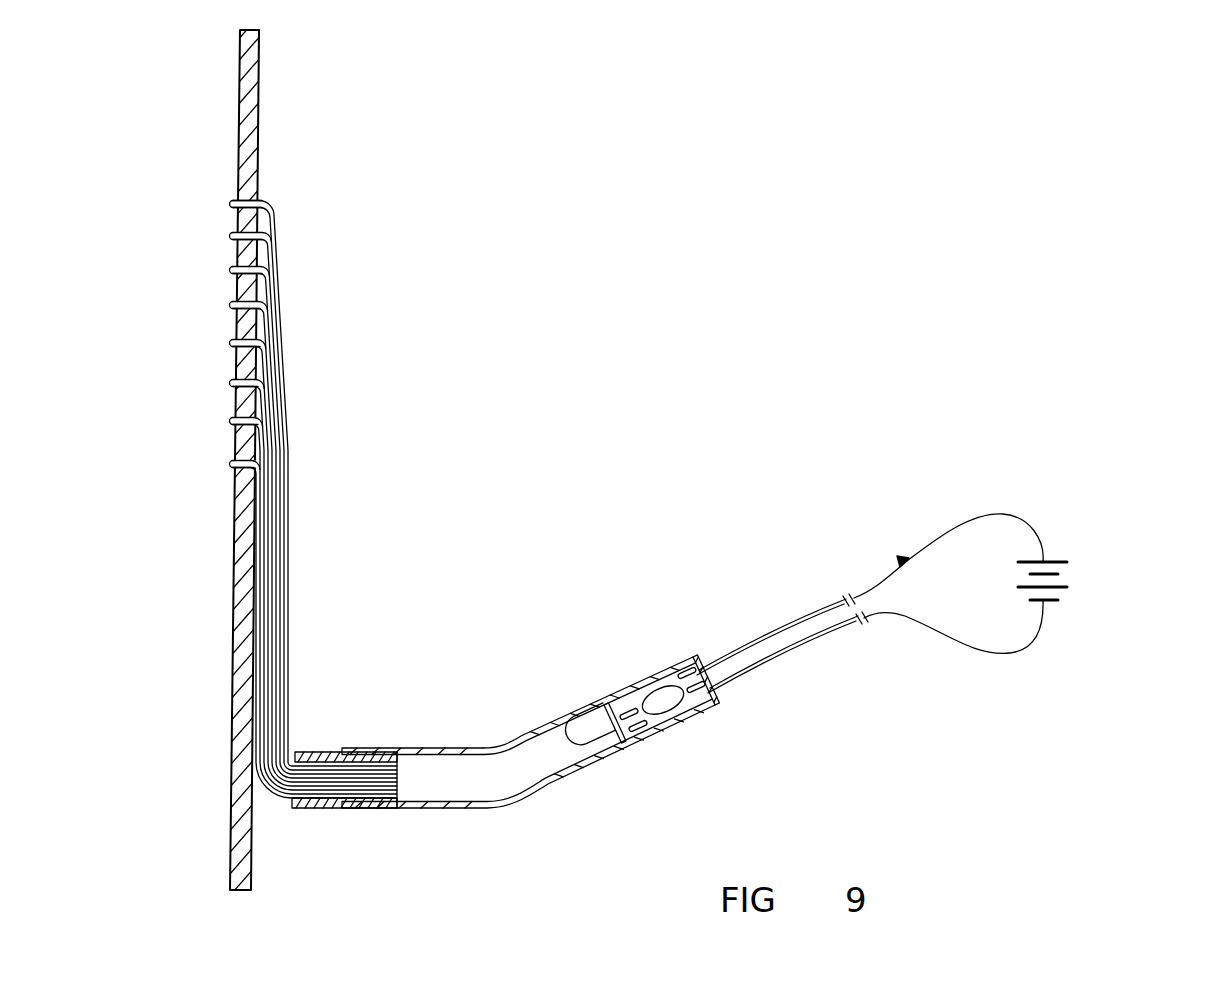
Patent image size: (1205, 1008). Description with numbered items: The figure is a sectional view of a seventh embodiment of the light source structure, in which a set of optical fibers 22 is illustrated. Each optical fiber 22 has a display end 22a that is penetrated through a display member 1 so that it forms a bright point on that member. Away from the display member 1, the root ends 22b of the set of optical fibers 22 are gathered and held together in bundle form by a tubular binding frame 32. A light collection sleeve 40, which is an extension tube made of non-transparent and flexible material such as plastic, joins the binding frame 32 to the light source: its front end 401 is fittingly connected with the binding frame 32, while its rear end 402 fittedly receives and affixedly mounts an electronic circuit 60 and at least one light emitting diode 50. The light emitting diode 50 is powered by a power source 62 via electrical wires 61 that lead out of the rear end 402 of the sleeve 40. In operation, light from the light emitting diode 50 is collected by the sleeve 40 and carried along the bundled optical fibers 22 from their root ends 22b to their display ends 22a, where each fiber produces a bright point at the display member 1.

The display member 1 is at (250, 139).
The display end 22a is at (235, 345).
The optical fibers 22 is at (292, 497).
The root ends 22b is at (388, 810).
The tubular binding frame 32 is at (323, 752).
The light collection sleeve 40 is at (512, 736).
The front end 401 is at (371, 749).
The rear end 402 is at (682, 658).
The light emitting diode 50 is at (583, 742).
The electronic circuit 60 is at (655, 718).
The electrical wires 61 is at (900, 557).
The power source 62 is at (1080, 543).